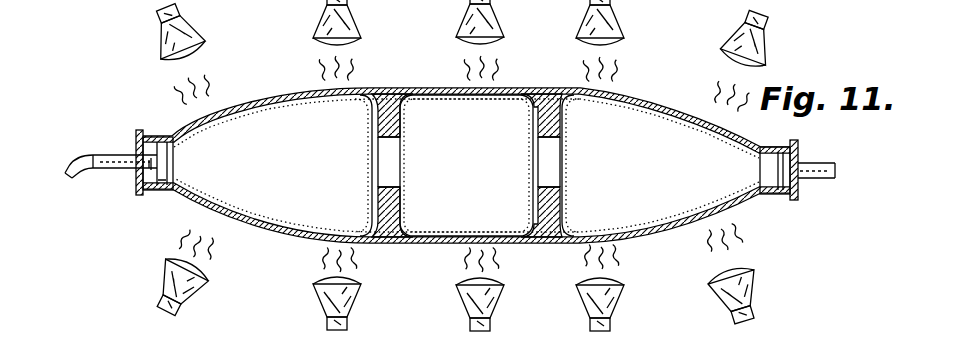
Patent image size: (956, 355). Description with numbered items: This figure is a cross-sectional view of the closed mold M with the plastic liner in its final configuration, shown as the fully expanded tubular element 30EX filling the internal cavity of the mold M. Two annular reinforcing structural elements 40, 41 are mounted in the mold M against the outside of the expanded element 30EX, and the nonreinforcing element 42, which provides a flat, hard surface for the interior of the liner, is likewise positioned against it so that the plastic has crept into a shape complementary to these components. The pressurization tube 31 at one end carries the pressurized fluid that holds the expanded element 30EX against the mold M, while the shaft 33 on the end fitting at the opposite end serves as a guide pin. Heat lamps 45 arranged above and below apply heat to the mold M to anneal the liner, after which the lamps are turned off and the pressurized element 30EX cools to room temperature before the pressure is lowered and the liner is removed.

The heat lamps 45 is at (198, 30).
The nonreinforcing element 42 is at (250, 108).
The annular reinforcing structural element 40 is at (400, 192).
The annular reinforcing structural element 41 is at (560, 208).
The pressurization tube 31 is at (120, 173).
The shaft 33 is at (818, 180).
The expanded tubular element 30EX is at (265, 224).
The mold M is at (427, 90).